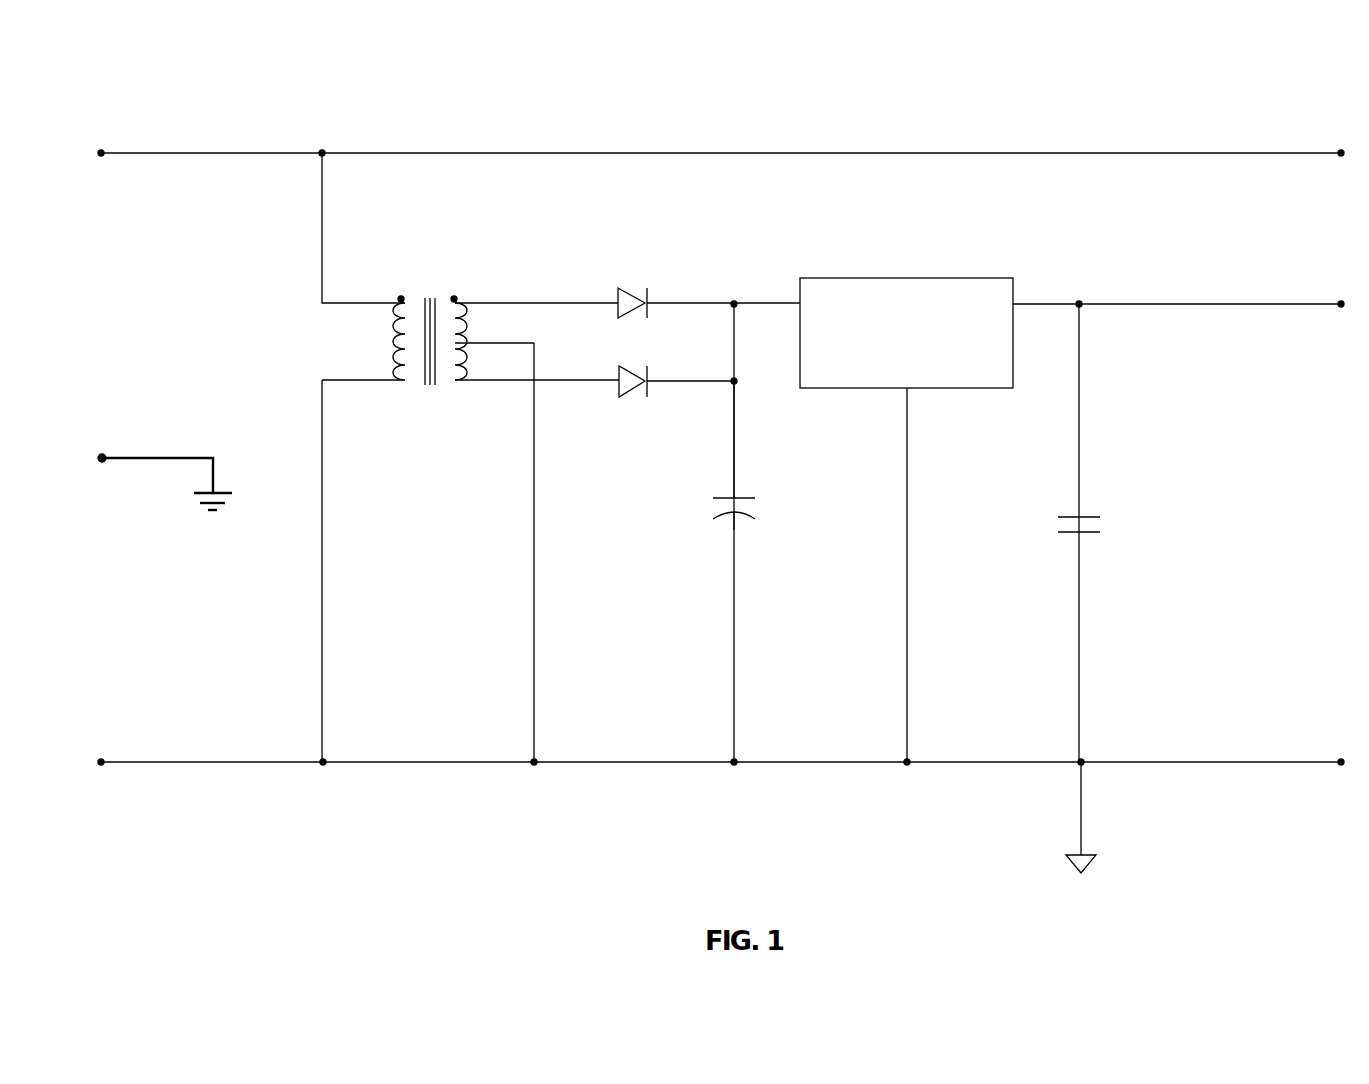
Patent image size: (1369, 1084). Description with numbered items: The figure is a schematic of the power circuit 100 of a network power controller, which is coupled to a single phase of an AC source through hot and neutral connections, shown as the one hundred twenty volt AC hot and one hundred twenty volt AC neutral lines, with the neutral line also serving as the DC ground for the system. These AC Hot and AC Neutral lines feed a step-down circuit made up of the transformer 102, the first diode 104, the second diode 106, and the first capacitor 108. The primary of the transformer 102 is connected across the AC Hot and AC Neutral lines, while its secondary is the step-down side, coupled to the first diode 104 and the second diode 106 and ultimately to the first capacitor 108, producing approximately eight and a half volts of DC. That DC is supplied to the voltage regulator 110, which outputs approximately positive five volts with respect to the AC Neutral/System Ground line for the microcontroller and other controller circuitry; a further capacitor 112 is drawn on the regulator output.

The power circuit 100 is at (214, 90).
The transformer T1 102 is at (428, 384).
The diode D1 104 is at (618, 298).
The diode D2 106 is at (619, 378).
The capacitor C1 108 is at (713, 508).
The voltage regulator U1 110 is at (945, 389).
The capacitor C2 112 is at (1058, 525).